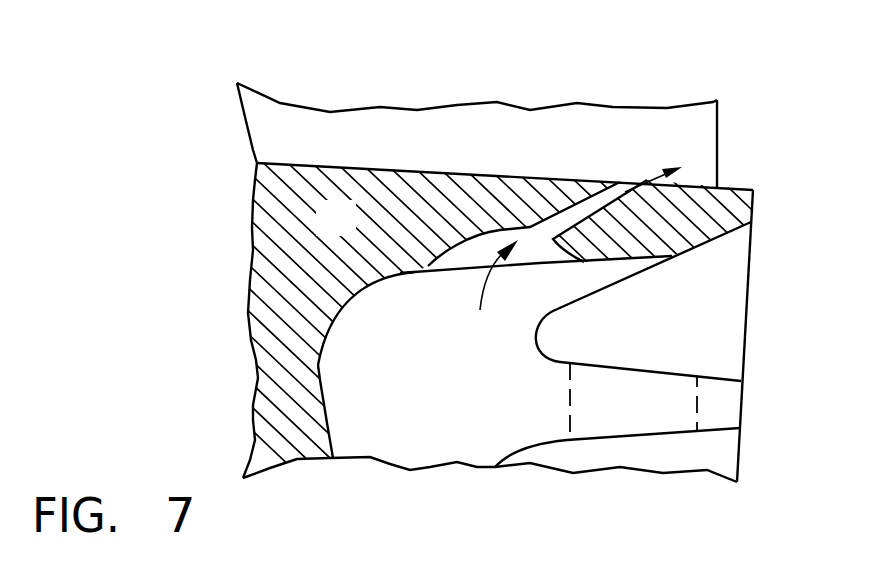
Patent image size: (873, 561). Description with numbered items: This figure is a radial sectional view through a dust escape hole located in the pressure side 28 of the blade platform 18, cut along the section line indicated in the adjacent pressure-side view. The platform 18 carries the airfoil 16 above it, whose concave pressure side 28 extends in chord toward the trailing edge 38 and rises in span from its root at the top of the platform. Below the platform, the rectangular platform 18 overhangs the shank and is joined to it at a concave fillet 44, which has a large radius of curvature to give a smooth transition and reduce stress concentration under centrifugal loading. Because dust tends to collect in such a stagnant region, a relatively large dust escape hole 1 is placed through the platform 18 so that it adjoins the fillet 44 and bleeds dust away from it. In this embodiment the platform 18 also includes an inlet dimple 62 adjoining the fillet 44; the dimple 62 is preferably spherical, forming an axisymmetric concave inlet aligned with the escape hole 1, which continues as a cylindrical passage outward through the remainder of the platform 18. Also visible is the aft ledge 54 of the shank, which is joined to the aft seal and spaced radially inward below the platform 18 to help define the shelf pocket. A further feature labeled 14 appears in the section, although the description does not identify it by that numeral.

The escape hole 1 is at (615, 183).
The airflow arrow / cooling flow 14 is at (482, 291).
The airfoil 16 is at (457, 103).
The platform 18 is at (349, 231).
The pressure side 28 is at (431, 150).
The trailing edge 38 is at (720, 127).
The fillet 44 is at (344, 305).
The aft ledge 54 is at (634, 368).
The inlet dimple 62 is at (528, 249).